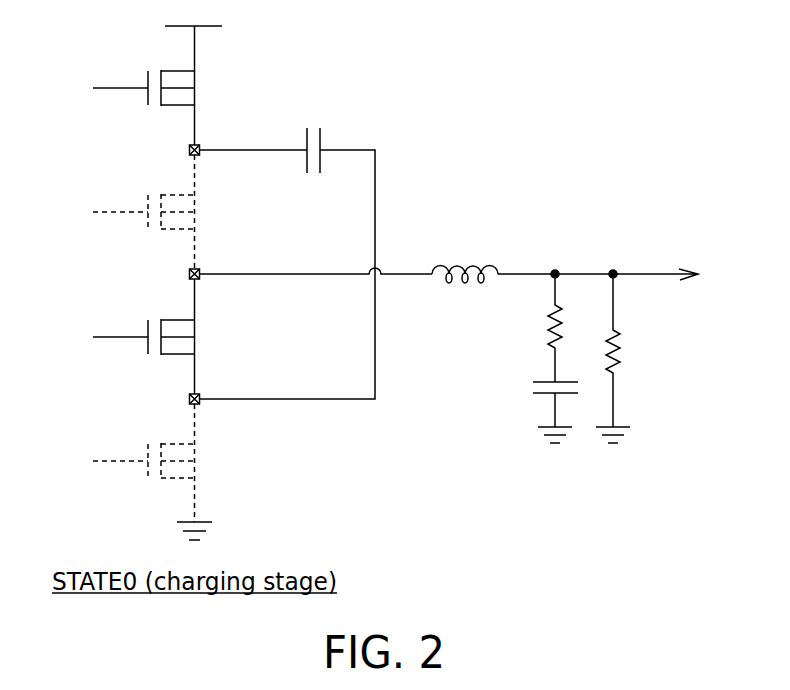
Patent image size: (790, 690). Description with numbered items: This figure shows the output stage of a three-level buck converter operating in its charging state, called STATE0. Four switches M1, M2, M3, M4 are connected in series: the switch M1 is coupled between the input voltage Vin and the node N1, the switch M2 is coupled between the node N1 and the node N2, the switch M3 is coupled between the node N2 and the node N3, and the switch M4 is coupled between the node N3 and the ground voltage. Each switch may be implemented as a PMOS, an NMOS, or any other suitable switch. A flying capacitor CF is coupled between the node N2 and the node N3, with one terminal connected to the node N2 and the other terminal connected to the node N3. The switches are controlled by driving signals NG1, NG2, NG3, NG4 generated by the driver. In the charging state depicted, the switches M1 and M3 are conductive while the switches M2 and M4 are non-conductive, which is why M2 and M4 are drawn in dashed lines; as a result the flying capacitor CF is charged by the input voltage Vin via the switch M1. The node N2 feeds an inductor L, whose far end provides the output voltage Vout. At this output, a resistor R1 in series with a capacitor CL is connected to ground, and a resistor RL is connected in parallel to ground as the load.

The input voltage Vin is at (193, 13).
The output voltage Vout is at (653, 260).
The switch M1 is at (193, 88).
The switch M2 is at (193, 212).
The switch M3 is at (193, 337).
The switch M4 is at (193, 461).
The driving signal NG1 is at (108, 75).
The driving signal NG2 is at (108, 199).
The driving signal NG3 is at (108, 324).
The driving signal NG4 is at (108, 448).
The node N1 is at (175, 150).
The node N2 is at (175, 276).
The node N3 is at (175, 400).
The flying capacitor CF is at (314, 144).
The inductor L is at (465, 260).
The resistor R1 is at (539, 328).
The capacitor CL is at (536, 411).
The resistor RL is at (624, 358).